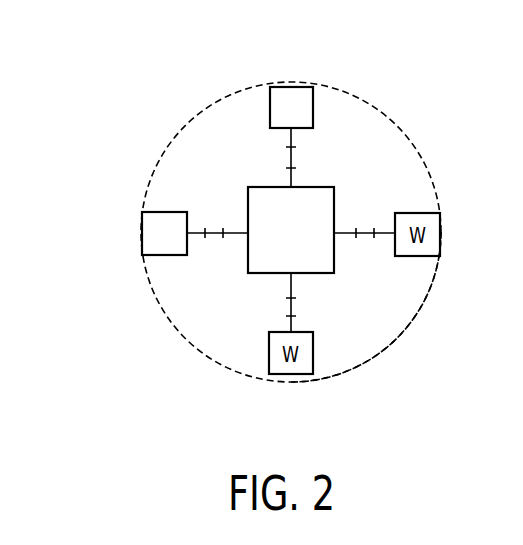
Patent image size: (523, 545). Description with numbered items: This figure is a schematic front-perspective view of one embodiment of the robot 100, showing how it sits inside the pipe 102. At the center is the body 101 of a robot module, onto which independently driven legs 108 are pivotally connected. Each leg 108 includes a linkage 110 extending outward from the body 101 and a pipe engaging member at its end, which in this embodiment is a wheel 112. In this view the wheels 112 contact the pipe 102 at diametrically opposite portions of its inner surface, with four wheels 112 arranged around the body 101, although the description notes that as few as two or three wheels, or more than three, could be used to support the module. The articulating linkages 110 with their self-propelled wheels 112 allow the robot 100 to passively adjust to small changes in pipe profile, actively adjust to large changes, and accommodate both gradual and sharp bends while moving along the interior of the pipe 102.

The robot 100 is at (406, 109).
The body 101 is at (306, 245).
The pipe 102 is at (379, 338).
The leg 108 is at (102, 266).
The linkage 110 is at (290, 303).
The wheel 112 is at (305, 92).